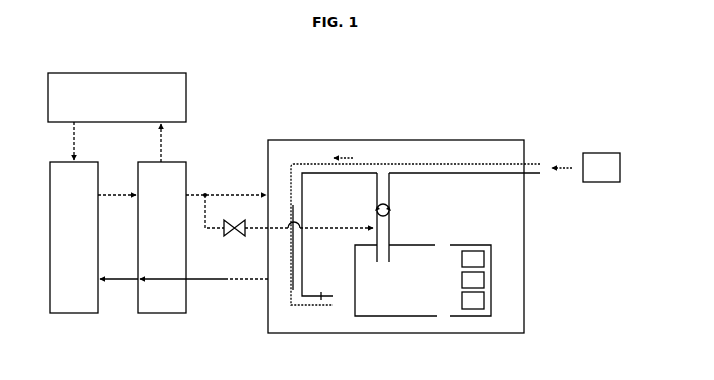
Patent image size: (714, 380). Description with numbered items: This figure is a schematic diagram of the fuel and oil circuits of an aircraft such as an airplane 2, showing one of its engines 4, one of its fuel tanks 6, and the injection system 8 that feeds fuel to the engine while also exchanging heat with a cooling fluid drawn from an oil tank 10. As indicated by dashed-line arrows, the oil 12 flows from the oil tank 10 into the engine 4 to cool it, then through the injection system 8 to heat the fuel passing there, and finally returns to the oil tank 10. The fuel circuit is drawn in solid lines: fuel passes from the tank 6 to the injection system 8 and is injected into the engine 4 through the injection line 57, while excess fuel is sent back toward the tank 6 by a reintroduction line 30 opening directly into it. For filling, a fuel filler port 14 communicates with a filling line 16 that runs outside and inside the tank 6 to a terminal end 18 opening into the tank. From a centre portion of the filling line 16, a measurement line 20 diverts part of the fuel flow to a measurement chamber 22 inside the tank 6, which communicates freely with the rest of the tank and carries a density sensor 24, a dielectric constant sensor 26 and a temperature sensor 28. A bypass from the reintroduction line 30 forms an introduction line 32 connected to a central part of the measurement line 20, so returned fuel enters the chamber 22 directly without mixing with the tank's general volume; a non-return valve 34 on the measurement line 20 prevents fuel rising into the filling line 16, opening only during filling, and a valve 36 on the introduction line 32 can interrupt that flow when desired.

The airplane 2 is at (390, 67).
The engine 4 is at (78, 239).
The fuel tank 6 is at (400, 158).
The injection system 8 is at (166, 239).
The oil tank 10 is at (124, 103).
The oil 12 is at (163, 143).
The fuel filler port 14 is at (608, 173).
The filling line 16 is at (444, 174).
The terminal end 18 is at (321, 296).
The measurement line 20 is at (391, 201).
The measurement chamber 22 is at (429, 285).
The density sensor 24 is at (479, 265).
The dielectric constant sensor 26 is at (479, 286).
The temperature sensor 28 is at (479, 306).
The reintroduction line 30 is at (232, 193).
The introduction line 32 is at (243, 233).
The non-return valve 34 is at (396, 214).
The valve 36 is at (235, 241).
The injection line 57 is at (122, 279).